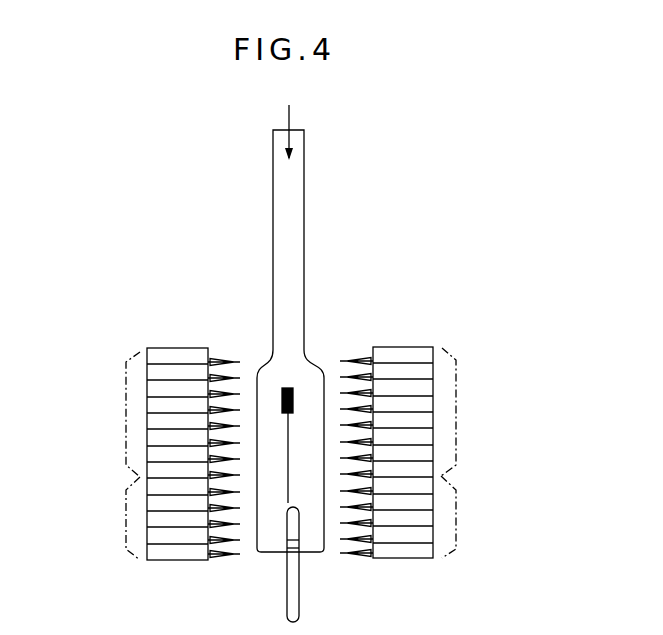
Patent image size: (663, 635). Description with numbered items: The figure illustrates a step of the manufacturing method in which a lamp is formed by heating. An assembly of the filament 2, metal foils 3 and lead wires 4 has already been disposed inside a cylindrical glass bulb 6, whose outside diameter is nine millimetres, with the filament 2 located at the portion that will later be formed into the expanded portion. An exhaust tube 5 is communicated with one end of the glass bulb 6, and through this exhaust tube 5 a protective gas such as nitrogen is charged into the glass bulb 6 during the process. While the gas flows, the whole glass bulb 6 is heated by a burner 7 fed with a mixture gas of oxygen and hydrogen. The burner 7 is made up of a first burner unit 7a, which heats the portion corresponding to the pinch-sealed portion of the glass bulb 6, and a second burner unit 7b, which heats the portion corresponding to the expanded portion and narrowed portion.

The filament 2 is at (288, 442).
The metal foils 3 is at (288, 502).
The lead wires 4 is at (298, 573).
The exhaust tube 5 is at (293, 197).
The glass bulb 6 is at (327, 365).
The burner 7 is at (187, 348).
The first burner unit 7a is at (125, 520).
The second burner unit 7b is at (123, 410).